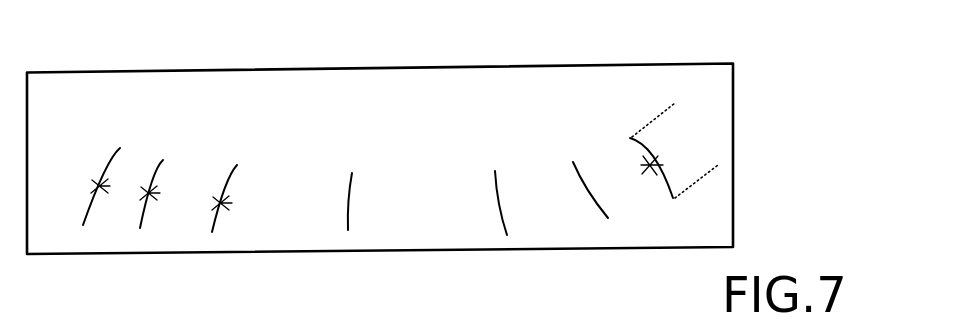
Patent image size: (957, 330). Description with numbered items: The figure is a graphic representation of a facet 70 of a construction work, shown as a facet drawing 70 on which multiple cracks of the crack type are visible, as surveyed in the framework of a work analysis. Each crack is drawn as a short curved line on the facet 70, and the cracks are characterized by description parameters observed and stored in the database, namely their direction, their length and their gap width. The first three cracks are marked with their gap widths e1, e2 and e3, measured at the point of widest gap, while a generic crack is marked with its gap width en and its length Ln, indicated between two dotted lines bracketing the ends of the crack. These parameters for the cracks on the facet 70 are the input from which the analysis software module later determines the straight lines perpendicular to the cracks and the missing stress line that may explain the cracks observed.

The facet of the work 70 is at (87, 280).
The gap width of first crack e1 is at (90, 191).
The gap width of second crack e2 is at (139, 197).
The gap width of third crack e3 is at (210, 207).
The gap width of n-th crack en is at (643, 173).
The length of n-th crack Ln is at (710, 170).